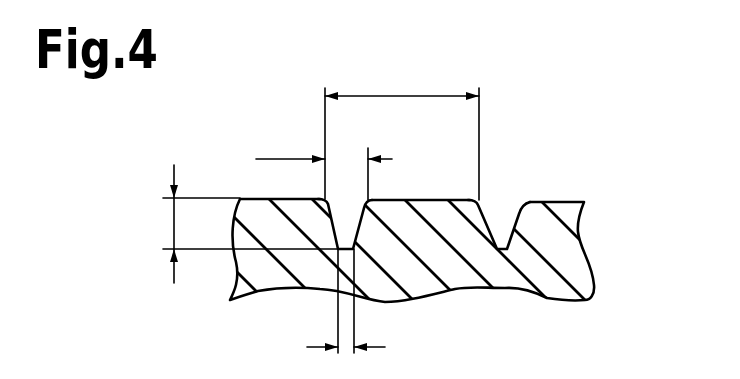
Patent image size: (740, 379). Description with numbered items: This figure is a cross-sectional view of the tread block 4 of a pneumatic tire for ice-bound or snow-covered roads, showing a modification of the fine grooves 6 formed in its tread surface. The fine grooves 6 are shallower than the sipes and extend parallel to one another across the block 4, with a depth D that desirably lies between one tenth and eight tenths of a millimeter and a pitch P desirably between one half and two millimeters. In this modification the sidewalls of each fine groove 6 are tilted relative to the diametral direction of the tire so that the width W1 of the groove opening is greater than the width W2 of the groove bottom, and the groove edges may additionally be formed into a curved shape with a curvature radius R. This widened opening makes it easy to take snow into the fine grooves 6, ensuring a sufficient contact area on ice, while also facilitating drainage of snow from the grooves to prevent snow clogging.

The block 4 is at (567, 201).
The fine groove 6 is at (503, 232).
The depth of the fine groove D is at (243, 224).
The pitch of the fine grooves P is at (402, 130).
The width of the opening of the fine groove W1 is at (324, 162).
The width of the bottom of the fine groove W2 is at (368, 306).
The curvature radius R is at (524, 208).